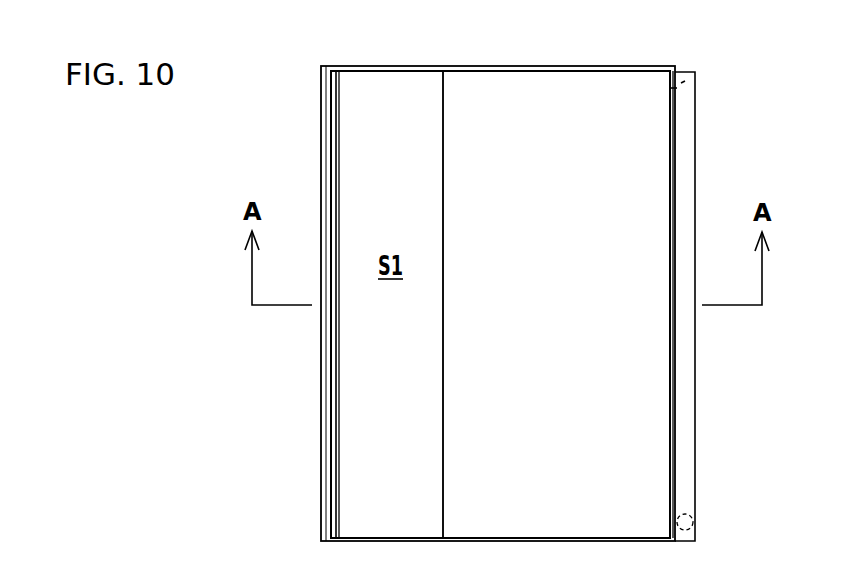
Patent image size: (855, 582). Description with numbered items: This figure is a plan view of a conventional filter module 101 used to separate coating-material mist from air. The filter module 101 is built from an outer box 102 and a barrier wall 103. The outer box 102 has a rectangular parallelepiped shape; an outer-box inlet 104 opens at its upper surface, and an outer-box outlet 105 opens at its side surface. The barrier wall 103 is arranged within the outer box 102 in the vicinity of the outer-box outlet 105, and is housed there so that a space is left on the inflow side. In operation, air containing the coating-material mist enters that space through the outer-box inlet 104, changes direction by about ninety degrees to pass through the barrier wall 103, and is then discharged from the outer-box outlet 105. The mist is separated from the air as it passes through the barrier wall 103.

The filter module 101 is at (280, 77).
The outer box 102 is at (410, 71).
The barrier wall 103 is at (553, 87).
The outer-box inlet 104 is at (339, 449).
The outer-box outlet 105 is at (696, 520).